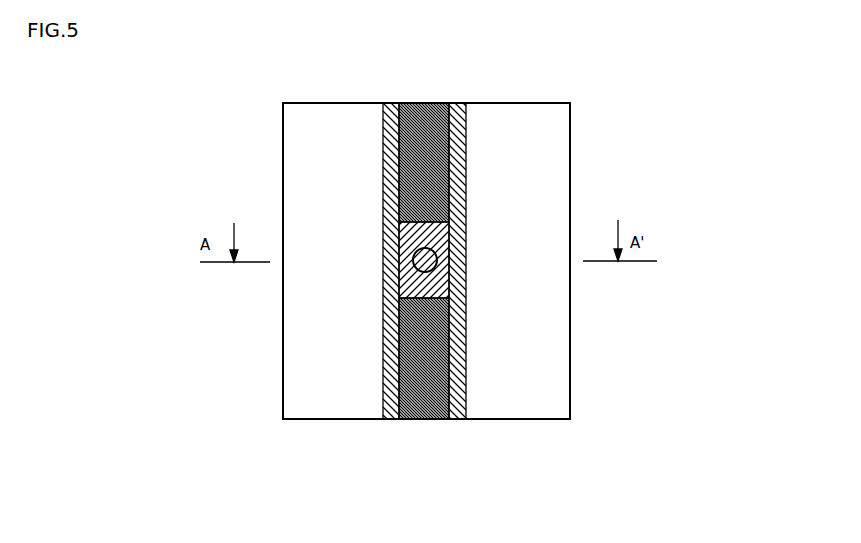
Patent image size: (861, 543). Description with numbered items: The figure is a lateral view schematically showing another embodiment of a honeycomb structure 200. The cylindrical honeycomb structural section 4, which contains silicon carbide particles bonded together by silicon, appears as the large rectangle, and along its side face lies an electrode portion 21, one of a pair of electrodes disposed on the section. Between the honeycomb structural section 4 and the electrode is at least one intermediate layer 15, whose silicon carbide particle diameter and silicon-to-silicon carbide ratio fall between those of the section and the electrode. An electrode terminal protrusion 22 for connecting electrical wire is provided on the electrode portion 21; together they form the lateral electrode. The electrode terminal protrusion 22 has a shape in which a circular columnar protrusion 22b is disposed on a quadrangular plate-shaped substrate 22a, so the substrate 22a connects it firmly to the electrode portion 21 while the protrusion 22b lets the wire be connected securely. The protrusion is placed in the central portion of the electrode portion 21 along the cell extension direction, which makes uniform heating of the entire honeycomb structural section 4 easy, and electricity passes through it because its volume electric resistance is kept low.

The honeycomb structure 200 is at (812, 97).
The honeycomb structural section 4 is at (571, 397).
The electrode portion 21 is at (453, 163).
The electrode terminal protrusion 22 is at (452, 247).
The substrate 22a is at (397, 272).
The protrusion 22b is at (413, 247).
The intermediate layer 15 is at (388, 420).